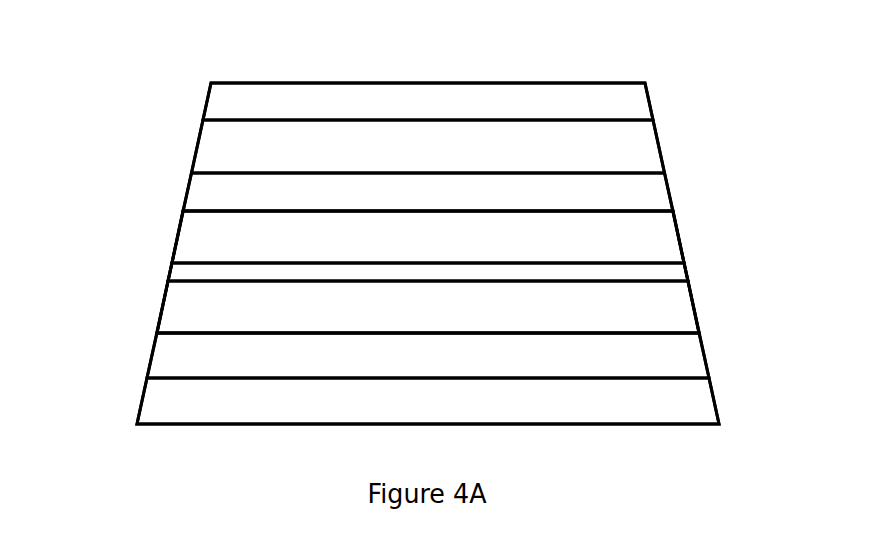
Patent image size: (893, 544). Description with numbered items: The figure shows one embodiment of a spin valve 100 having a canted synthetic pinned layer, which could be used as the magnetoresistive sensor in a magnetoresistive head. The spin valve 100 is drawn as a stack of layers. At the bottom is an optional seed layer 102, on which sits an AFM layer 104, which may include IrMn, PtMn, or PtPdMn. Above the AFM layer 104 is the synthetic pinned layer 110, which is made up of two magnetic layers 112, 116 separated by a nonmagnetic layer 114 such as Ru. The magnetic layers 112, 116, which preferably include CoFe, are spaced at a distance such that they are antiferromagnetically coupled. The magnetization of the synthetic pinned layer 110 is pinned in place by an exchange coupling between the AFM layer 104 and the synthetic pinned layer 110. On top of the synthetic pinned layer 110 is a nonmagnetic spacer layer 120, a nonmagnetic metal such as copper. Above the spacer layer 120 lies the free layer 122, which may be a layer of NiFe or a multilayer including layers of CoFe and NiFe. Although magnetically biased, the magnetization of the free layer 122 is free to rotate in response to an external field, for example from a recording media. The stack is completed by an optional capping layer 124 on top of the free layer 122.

The spin valve 100 is at (451, 26).
The seed layer 102 is at (590, 425).
The AFM layer 104 is at (150, 352).
The synthetic pinned layer 110 is at (735, 270).
The magnetic layer 112 is at (163, 300).
The nonmagnetic layer 114 is at (167, 273).
The magnetic layer 116 is at (170, 245).
The spacer layer 120 is at (183, 190).
The free layer 122 is at (658, 145).
The capping layer 124 is at (498, 82).